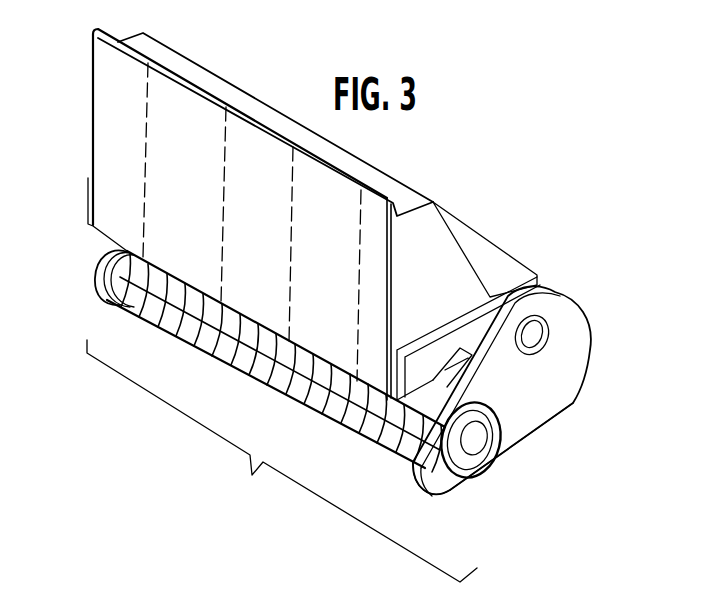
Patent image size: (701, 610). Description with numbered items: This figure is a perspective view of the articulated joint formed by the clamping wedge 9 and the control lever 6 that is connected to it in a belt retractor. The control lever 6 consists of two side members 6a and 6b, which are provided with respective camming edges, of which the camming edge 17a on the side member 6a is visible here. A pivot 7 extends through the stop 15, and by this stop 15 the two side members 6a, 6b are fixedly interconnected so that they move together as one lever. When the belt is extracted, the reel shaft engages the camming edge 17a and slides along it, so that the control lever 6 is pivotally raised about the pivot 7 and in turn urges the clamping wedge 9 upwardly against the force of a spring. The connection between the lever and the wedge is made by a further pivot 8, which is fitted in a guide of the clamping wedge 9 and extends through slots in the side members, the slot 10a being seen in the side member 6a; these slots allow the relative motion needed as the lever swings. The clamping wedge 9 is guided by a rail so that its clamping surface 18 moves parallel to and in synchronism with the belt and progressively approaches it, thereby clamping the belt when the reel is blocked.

The clamping surface 18 is at (130, 138).
The clamping wedge 9 is at (437, 247).
The slot 10a is at (557, 301).
The pivot 8 is at (519, 403).
The camming edge 17a is at (549, 426).
The pivot 7 is at (480, 444).
The side member 6a is at (446, 483).
The stop 15 is at (328, 407).
The control lever 6 is at (282, 416).
The side member 6b is at (103, 287).